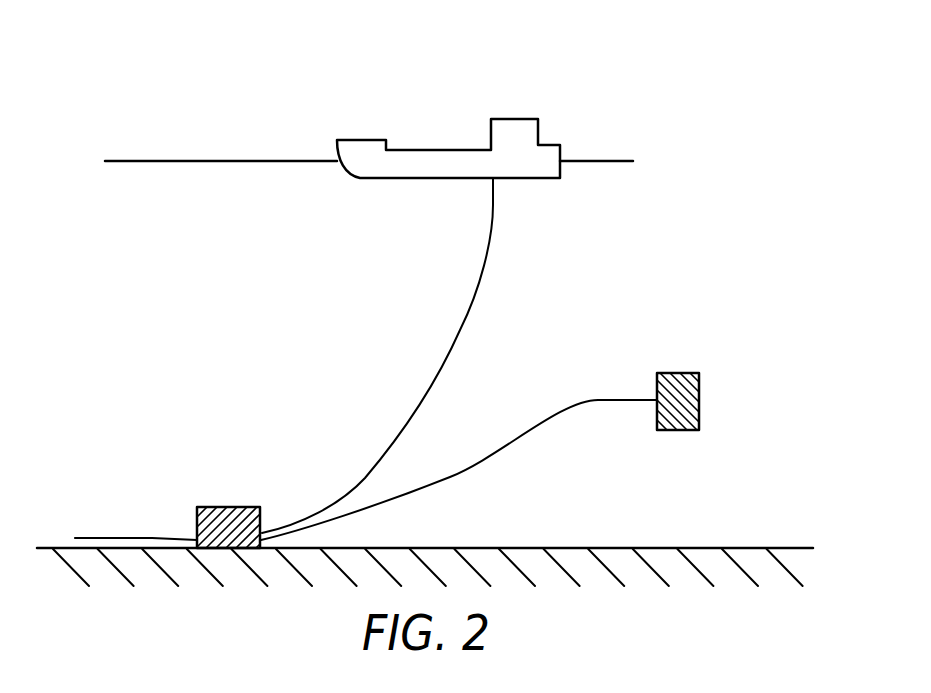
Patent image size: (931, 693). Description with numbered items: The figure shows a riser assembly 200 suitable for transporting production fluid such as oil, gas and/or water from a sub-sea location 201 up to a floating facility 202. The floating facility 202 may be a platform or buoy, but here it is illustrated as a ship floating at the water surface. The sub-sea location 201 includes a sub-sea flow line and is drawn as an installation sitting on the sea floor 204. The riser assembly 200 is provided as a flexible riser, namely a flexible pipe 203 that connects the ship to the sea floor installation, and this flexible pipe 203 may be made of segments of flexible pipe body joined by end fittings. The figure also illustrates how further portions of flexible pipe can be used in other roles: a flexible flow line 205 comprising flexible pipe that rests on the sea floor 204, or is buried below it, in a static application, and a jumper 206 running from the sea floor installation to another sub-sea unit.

The riser assembly 200 is at (259, 321).
The sub-sea location 201 is at (226, 507).
The floating facility 202 is at (360, 140).
The flexible pipe 203 is at (450, 358).
The sea floor 204 is at (760, 548).
The flow line 205 is at (118, 538).
The jumper 206 is at (577, 403).